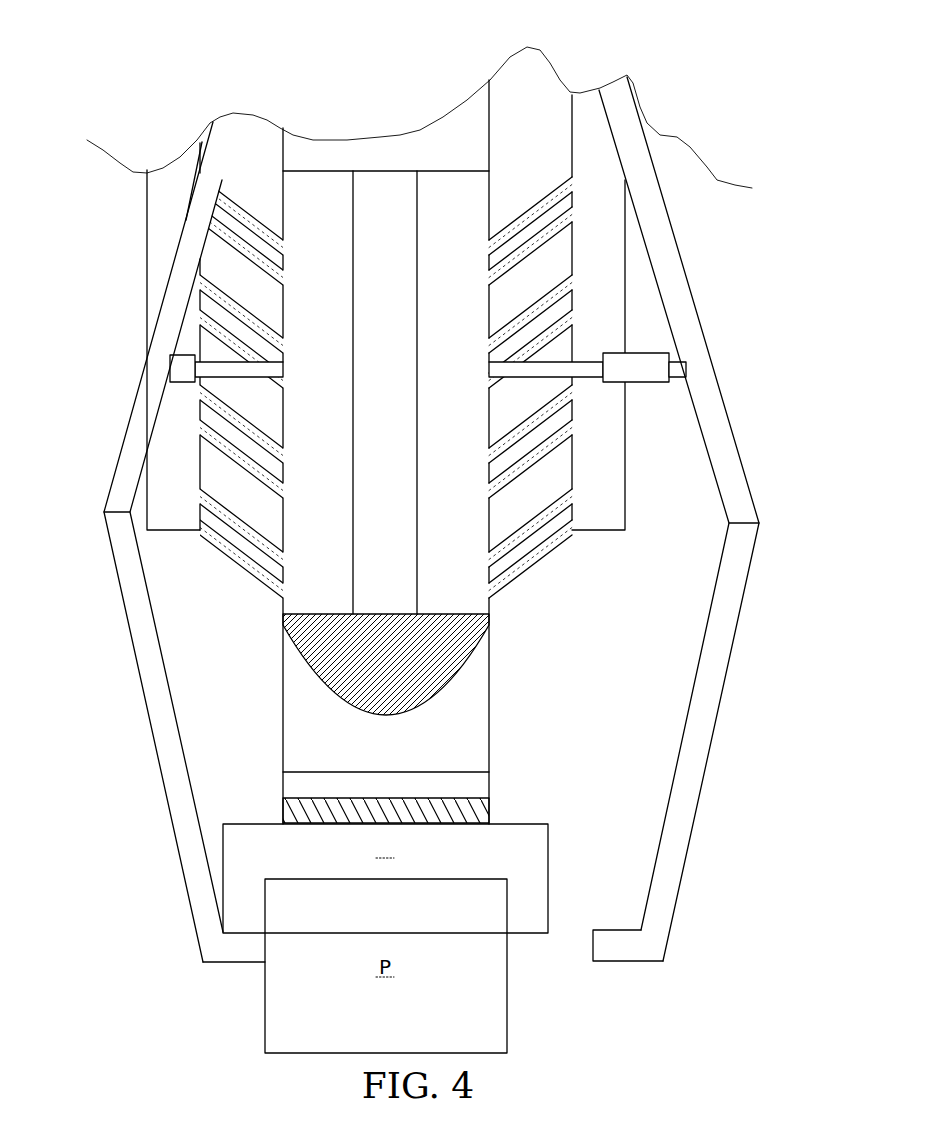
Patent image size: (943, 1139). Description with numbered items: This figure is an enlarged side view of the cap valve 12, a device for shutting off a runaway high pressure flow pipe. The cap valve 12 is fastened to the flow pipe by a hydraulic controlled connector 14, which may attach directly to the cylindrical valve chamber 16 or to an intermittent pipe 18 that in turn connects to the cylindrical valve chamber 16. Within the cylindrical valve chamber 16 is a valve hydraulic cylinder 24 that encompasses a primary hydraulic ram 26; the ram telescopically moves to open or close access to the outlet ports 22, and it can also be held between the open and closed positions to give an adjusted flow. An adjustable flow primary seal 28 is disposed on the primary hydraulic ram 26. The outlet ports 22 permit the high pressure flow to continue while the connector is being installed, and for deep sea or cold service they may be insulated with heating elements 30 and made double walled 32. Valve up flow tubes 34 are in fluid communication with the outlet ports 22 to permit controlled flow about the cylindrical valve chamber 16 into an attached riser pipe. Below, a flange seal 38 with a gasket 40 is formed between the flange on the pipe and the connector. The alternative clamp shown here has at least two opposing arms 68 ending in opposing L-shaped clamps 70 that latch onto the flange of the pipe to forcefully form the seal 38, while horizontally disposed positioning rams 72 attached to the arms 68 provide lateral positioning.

The cap valve 12 is at (452, 519).
The hydraulic controlled connector 14 is at (749, 851).
The cylindrical valve chamber 16 is at (484, 322).
The intermittent pipe 18 is at (492, 712).
The outlet ports 22 is at (543, 198).
The valve hydraulic cylinder 24 is at (469, 153).
The primary hydraulic ram 26 is at (372, 437).
The adjustable flow primary seal 28 is at (491, 627).
The heating elements 30 is at (538, 552).
The double walled 32 is at (500, 262).
The valve up flow tubes 34 is at (587, 246).
The flange seal 38 is at (503, 808).
The gasket 40 is at (287, 802).
The opposing arms 68 is at (117, 596).
The L-shaped clamps 70 is at (203, 960).
The horizontally disposed positioning rams 72 is at (638, 383).